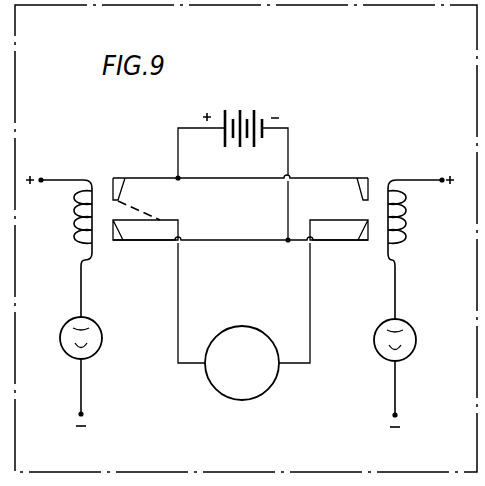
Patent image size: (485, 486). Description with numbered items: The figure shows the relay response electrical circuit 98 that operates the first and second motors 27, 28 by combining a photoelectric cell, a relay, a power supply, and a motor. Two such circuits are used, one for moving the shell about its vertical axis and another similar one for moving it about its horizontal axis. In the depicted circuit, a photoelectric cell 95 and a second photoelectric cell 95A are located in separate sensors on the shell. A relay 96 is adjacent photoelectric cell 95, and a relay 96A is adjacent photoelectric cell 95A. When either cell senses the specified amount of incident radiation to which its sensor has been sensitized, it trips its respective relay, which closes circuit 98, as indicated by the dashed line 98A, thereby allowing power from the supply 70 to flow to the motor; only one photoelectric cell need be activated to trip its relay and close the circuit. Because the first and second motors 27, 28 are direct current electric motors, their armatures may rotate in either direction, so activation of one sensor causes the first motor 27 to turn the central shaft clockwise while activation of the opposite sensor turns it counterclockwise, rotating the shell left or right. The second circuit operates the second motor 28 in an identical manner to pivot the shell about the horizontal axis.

The power supply 70 is at (258, 103).
The dashed line 98A is at (150, 212).
The relay 96 is at (65, 223).
The relay 96A is at (407, 233).
The photoelectric cell 95 is at (55, 352).
The photoelectric cell 95A is at (418, 357).
The relay response electrical circuit 98 is at (175, 372).
The first motor 27 is at (262, 391).
The second motor 28 is at (253, 403).